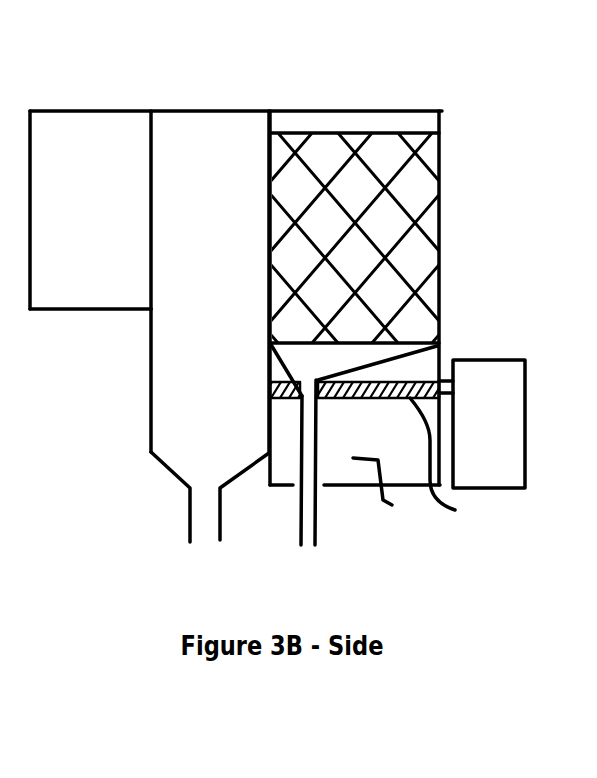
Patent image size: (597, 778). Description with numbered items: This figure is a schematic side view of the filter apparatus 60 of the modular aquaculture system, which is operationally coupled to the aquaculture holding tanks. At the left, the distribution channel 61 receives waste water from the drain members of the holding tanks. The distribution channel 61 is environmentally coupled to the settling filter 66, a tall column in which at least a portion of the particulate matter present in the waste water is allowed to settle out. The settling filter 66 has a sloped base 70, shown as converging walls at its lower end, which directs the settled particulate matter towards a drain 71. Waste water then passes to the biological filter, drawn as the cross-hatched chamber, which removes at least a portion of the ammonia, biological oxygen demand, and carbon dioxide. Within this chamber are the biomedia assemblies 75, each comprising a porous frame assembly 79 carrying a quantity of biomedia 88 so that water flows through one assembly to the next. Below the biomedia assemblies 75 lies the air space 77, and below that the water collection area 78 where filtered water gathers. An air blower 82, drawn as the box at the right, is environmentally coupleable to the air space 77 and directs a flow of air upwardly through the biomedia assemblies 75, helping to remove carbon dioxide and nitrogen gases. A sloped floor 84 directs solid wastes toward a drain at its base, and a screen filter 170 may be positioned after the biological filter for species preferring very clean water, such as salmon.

The filter apparatus 60 is at (459, 68).
The distribution channel 61 is at (92, 128).
The settling filter 66 is at (210, 130).
The sloped base 70 is at (163, 471).
The drain 71 is at (205, 518).
The biomedia assembly 75 is at (471, 248).
The air space 77 is at (413, 362).
The water collection area 78 is at (388, 489).
The porous frame assembly 79 is at (398, 189).
The air blower 82 is at (528, 380).
The sloped floor 84 is at (367, 398).
The filter media 88 is at (402, 253).
The screen filter 170 is at (455, 510).